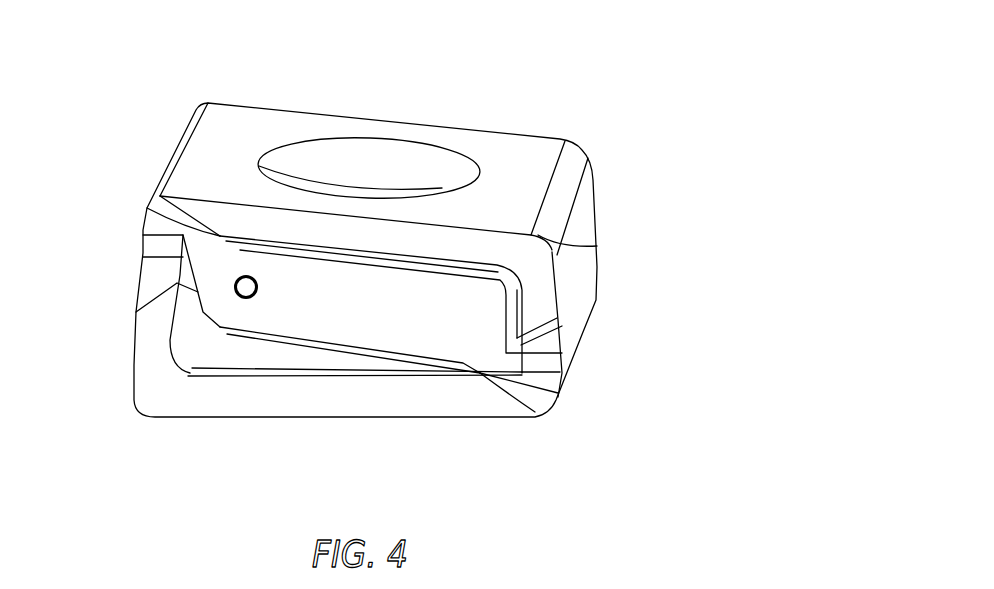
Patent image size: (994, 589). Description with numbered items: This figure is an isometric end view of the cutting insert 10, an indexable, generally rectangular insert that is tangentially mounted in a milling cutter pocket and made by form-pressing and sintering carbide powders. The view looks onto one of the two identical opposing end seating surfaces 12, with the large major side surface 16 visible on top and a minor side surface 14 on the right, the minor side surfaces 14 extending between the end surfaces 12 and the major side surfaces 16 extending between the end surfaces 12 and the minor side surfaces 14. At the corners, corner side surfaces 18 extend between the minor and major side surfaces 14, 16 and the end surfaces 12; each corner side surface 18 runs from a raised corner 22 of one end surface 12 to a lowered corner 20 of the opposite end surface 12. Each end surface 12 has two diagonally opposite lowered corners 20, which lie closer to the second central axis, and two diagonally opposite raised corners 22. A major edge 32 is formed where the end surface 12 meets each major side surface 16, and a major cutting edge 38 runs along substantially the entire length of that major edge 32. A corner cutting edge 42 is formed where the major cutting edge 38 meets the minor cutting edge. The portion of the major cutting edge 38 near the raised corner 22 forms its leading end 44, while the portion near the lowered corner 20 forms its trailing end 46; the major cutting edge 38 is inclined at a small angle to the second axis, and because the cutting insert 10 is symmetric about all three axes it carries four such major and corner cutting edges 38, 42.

The cutting insert 10 is at (567, 57).
The end seating surface 12 is at (316, 358).
The minor side surface 14 is at (583, 275).
The major side surface 16 is at (241, 123).
The corner side surface 18 is at (188, 137).
The lowered corner 20 is at (145, 207).
The raised corner 22 is at (546, 233).
The major edge 32 is at (373, 428).
The major cutting edge 38 is at (427, 420).
The corner cutting edge 42 is at (600, 247).
The leading end 44 is at (243, 418).
The trailing end 46 is at (472, 418).